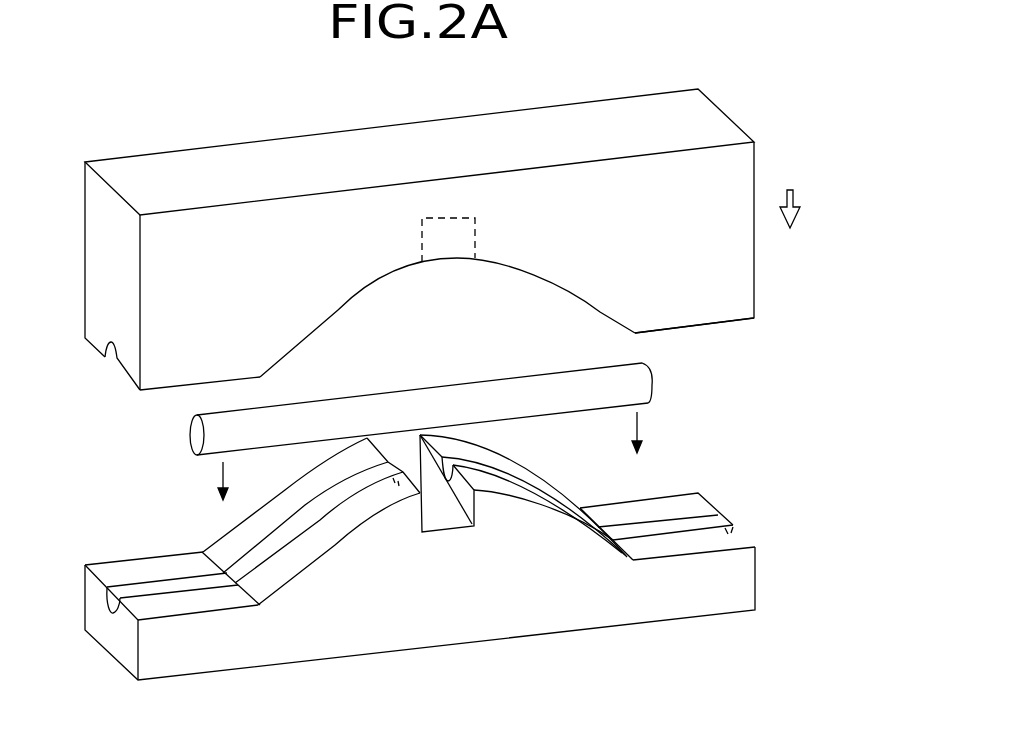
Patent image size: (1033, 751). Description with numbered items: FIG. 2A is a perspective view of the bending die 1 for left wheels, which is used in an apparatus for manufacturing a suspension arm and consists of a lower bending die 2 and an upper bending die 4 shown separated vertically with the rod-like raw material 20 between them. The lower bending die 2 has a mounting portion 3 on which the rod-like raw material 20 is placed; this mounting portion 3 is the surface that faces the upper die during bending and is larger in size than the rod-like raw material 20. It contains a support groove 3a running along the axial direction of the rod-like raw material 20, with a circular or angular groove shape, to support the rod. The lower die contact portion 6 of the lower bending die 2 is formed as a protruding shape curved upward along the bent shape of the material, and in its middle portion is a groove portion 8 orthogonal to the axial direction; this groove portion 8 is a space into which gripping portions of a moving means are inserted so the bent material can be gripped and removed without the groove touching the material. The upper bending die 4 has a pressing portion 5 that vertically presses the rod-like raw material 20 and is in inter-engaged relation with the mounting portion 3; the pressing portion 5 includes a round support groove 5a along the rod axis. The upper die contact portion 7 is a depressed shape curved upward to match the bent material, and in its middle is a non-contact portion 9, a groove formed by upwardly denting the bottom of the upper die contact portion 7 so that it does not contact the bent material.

The bending die 1 is at (196, 121).
The lower bending die 2 is at (105, 635).
The mounting portion 3 is at (140, 567).
The support groove 3a is at (108, 600).
The upper bending die 4 is at (140, 168).
The pressing portion 5 is at (720, 323).
The support groove 5a is at (115, 363).
The lower die contact portion 6 is at (313, 508).
The upper die contact portion 7 is at (342, 305).
The groove portion 8 is at (440, 518).
The non-contact portion 9 is at (445, 235).
The rod-like raw material 20 is at (208, 414).